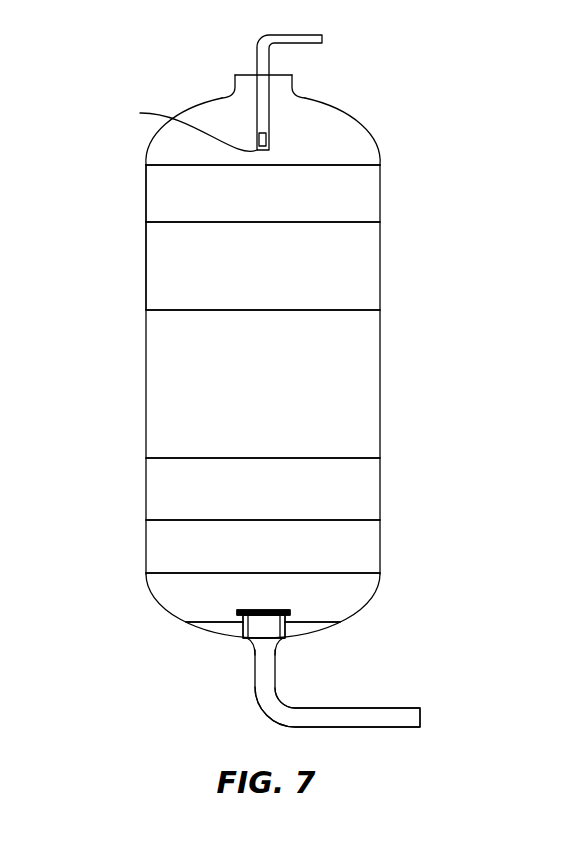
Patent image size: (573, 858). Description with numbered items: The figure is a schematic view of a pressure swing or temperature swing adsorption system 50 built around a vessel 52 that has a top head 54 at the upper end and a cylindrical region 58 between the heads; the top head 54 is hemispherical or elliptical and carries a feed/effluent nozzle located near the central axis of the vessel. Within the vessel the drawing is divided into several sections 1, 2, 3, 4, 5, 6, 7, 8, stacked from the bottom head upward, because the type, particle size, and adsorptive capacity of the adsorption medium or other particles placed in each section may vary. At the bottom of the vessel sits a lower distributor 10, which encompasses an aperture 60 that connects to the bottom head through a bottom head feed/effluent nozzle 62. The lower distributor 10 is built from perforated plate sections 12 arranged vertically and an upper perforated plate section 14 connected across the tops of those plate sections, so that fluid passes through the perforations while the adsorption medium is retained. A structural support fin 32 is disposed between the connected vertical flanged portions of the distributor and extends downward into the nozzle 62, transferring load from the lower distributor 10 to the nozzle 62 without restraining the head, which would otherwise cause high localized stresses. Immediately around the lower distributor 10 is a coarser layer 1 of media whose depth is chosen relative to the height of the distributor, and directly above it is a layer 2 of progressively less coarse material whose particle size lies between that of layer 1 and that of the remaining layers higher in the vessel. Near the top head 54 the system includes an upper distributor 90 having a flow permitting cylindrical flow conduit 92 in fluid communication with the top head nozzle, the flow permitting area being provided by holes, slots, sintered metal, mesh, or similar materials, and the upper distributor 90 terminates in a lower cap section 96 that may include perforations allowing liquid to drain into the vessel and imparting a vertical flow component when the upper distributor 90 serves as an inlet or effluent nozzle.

The coarser layer 1 is at (307, 628).
The layer of progressively less coarse material 2 is at (355, 597).
The section of vessel 3 is at (367, 547).
The section of vessel 4 is at (367, 493).
The section of vessel 5 is at (367, 393).
The section of vessel 6 is at (367, 273).
The section of vessel 7 is at (367, 200).
The section of vessel 8 is at (360, 143).
The lower distributor 10 is at (283, 603).
The perforated plate section 12 is at (240, 628).
The upper perforated plate section 14 is at (262, 610).
The structural support fin 32 is at (252, 641).
The adsorption system 50 is at (102, 300).
The vessel 52 is at (138, 176).
The top head 54 is at (235, 78).
The cylindrical region 58 is at (146, 253).
The aperture 60 is at (276, 643).
The bottom head feed/effluent nozzle 62 is at (242, 648).
The upper distributor 90 is at (278, 113).
The flow permitting cylindrical flow conduit 92 is at (266, 140).
The lower cap section 96 is at (180, 127).